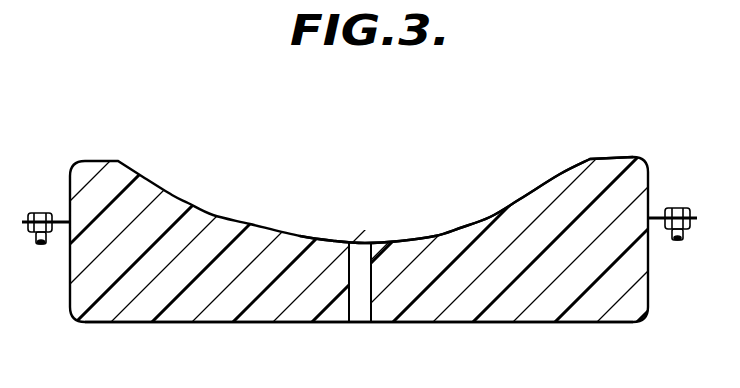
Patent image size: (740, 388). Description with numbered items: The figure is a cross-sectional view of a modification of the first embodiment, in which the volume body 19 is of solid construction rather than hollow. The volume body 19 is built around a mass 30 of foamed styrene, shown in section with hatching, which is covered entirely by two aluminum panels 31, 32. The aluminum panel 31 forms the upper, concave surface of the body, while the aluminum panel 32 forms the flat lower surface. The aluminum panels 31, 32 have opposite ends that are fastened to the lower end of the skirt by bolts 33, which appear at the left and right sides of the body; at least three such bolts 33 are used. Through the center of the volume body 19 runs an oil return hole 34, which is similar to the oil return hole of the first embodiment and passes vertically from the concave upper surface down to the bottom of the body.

The volume body 19 is at (545, 165).
The mass of foamed styrene 30 is at (447, 240).
The aluminum panel 31 is at (513, 200).
The aluminum panel 32 is at (525, 323).
The bolts 33 is at (41, 213).
The oil return hole 34 is at (351, 303).